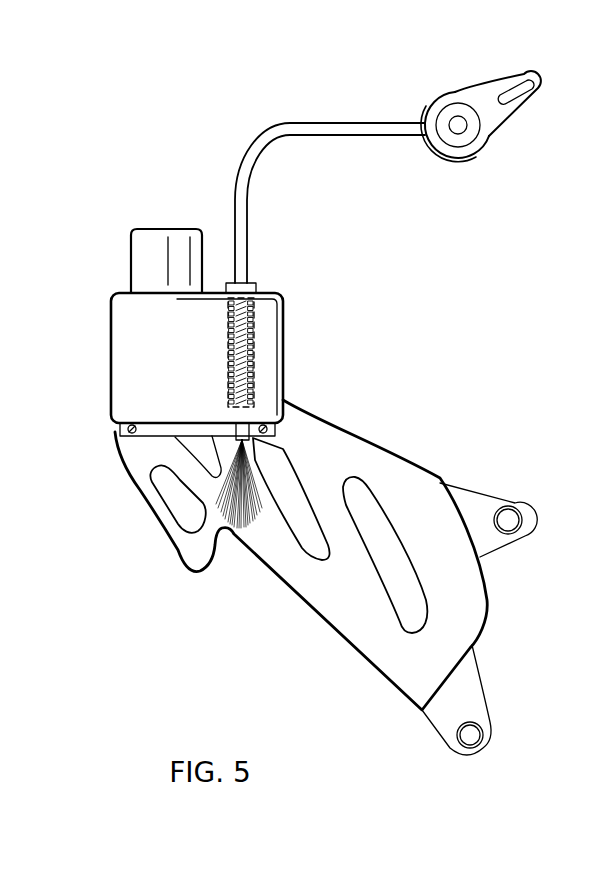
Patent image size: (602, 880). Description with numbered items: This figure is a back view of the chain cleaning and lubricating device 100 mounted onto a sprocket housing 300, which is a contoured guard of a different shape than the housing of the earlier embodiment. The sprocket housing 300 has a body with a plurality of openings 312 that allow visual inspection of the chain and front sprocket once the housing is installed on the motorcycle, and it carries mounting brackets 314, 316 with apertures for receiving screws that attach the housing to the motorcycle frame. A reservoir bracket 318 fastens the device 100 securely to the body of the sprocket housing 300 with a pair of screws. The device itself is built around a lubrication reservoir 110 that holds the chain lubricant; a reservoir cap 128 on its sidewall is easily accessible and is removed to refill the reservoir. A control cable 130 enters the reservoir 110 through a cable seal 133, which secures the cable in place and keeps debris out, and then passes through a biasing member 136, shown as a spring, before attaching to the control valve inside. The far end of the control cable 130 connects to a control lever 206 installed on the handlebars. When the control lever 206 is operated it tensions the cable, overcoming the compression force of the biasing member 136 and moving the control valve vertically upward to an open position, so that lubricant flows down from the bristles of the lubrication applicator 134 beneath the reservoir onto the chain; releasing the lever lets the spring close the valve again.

The chain cleaning and lubricating device 100 is at (110, 268).
The lubrication reservoir 110 is at (110, 340).
The reservoir cap 128 is at (167, 229).
The control cable 130 is at (262, 134).
The cable seal 133 is at (254, 284).
The lubrication applicator 134 is at (243, 540).
The biasing member 136 is at (258, 332).
The control lever 206 is at (487, 93).
The sprocket housing 300 is at (353, 402).
The openings 312 is at (190, 518).
The mounting bracket 314 is at (488, 740).
The mounting bracket 316 is at (512, 512).
The reservoir bracket 318 is at (133, 434).